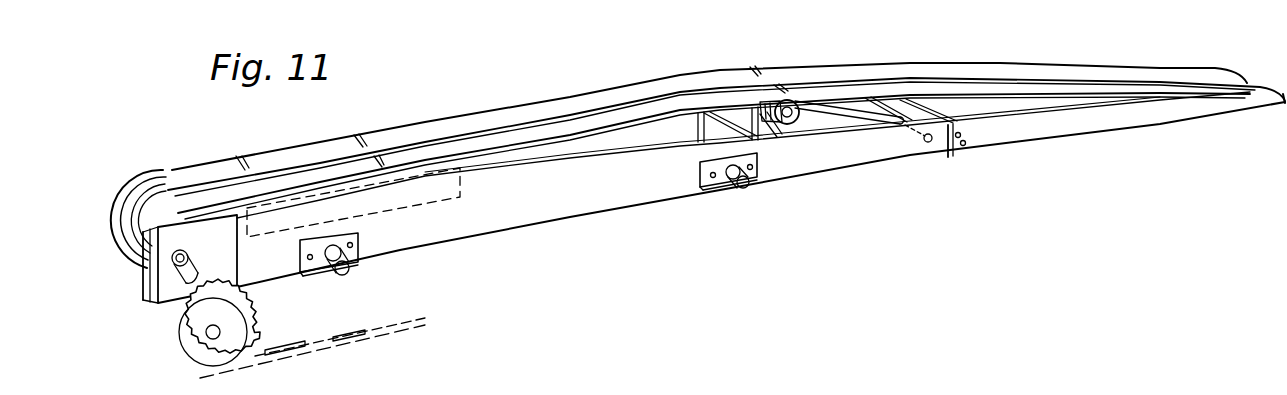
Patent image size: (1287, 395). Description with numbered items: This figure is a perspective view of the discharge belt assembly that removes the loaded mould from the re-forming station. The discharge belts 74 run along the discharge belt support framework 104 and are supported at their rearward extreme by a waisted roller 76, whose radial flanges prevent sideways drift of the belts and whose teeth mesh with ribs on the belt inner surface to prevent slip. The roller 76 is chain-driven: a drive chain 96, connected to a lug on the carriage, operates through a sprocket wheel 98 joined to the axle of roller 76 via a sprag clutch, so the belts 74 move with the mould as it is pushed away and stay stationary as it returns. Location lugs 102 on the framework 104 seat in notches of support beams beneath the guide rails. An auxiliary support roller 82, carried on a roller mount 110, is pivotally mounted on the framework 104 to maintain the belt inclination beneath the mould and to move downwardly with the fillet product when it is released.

The discharge belts 74 is at (580, 123).
The waisted roller 76 is at (140, 176).
The auxiliary support roller 82 is at (790, 100).
The drive chain 96 is at (357, 337).
The sprocket wheel 98 is at (197, 347).
The location lugs 102 is at (340, 270).
The discharge belt support framework 104 is at (633, 183).
The roller mount 110 is at (847, 110).